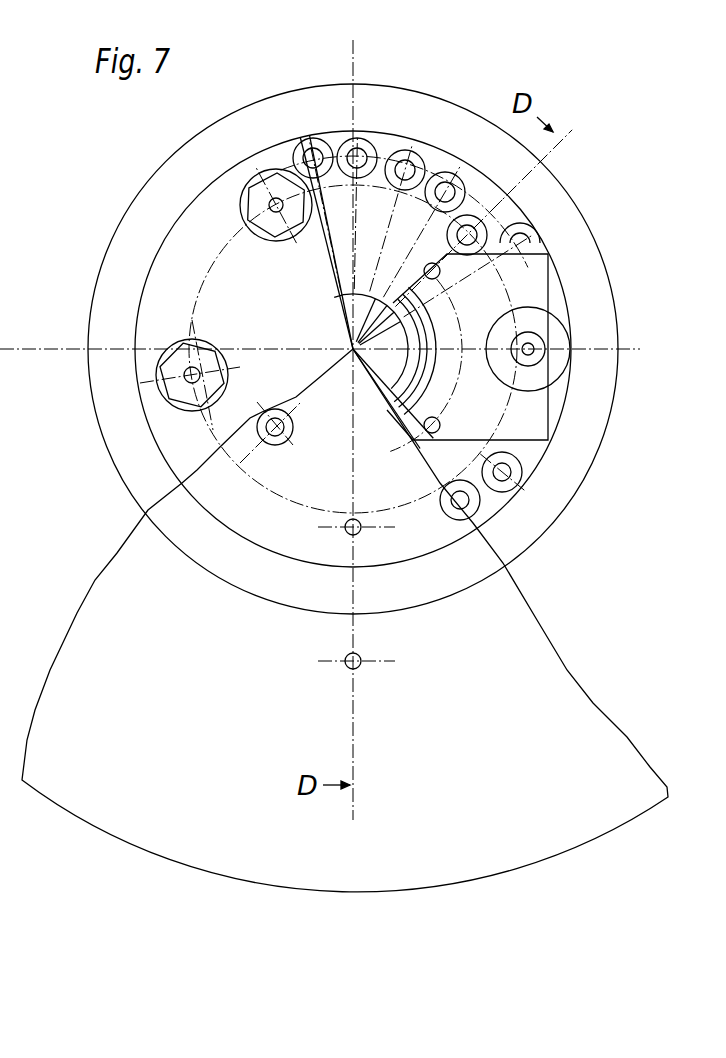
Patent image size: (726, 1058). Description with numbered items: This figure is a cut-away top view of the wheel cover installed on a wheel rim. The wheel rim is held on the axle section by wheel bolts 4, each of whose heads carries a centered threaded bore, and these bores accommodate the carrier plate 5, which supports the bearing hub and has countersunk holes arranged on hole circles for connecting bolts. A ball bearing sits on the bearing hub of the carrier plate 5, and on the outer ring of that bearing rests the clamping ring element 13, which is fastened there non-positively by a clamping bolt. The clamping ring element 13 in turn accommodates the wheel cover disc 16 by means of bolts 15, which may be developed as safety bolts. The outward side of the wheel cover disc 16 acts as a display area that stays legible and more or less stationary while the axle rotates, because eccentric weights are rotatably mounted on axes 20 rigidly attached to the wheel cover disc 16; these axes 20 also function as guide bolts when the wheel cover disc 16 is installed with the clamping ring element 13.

The wheel bolts 4 is at (333, 349).
The carrier plate 5 is at (211, 228).
The clamping ring element 13 is at (542, 410).
The bolts 15 is at (134, 387).
The wheel cover disc 16 is at (603, 570).
The axes 20 is at (540, 356).